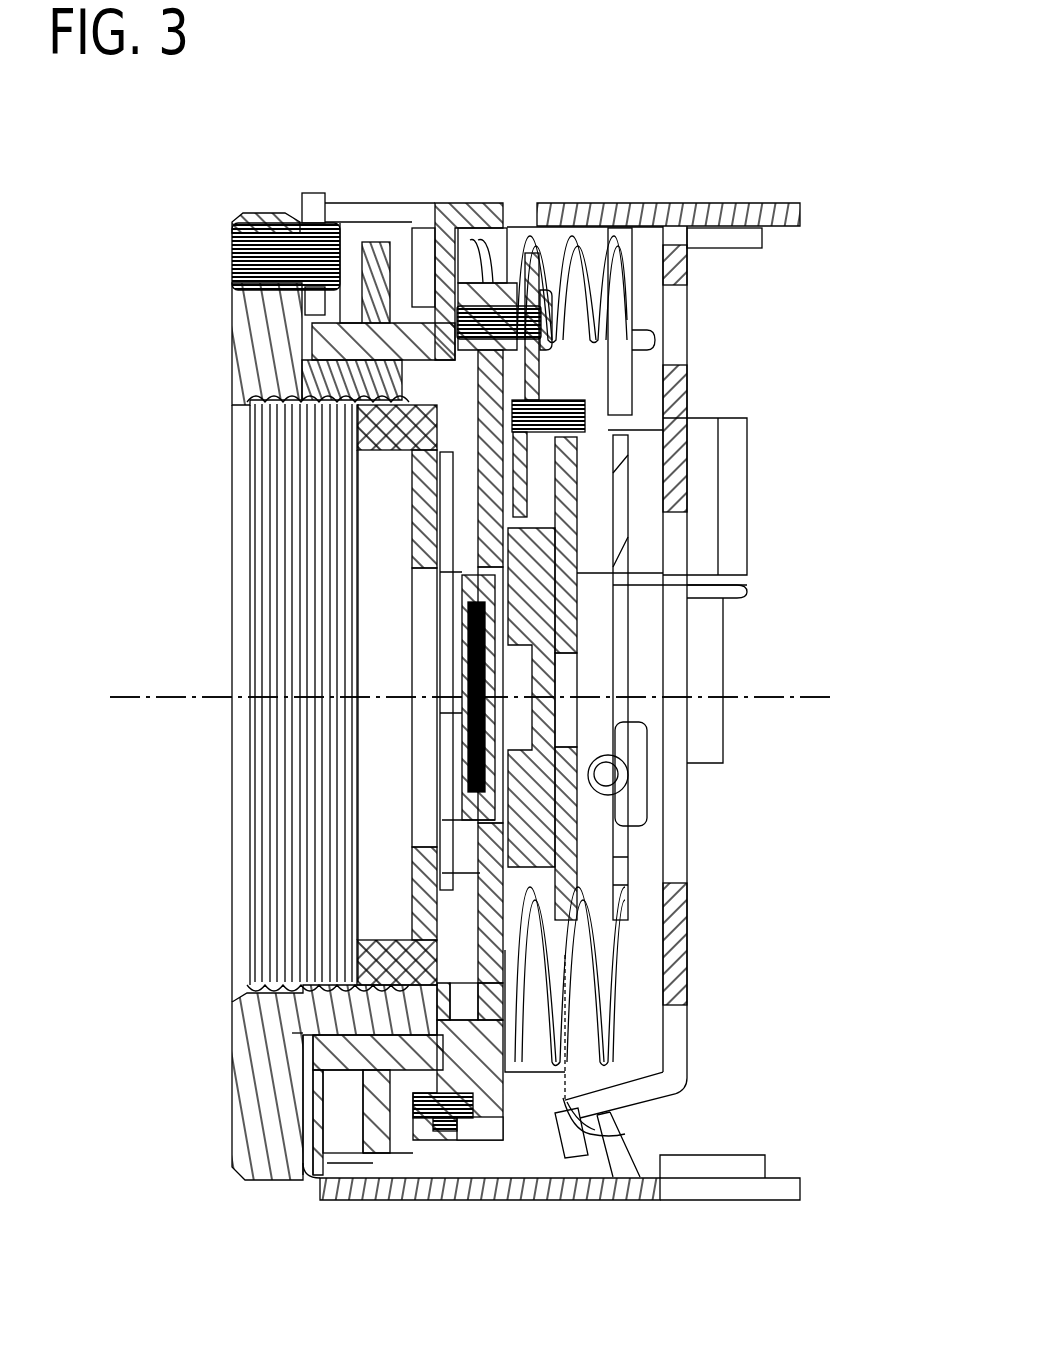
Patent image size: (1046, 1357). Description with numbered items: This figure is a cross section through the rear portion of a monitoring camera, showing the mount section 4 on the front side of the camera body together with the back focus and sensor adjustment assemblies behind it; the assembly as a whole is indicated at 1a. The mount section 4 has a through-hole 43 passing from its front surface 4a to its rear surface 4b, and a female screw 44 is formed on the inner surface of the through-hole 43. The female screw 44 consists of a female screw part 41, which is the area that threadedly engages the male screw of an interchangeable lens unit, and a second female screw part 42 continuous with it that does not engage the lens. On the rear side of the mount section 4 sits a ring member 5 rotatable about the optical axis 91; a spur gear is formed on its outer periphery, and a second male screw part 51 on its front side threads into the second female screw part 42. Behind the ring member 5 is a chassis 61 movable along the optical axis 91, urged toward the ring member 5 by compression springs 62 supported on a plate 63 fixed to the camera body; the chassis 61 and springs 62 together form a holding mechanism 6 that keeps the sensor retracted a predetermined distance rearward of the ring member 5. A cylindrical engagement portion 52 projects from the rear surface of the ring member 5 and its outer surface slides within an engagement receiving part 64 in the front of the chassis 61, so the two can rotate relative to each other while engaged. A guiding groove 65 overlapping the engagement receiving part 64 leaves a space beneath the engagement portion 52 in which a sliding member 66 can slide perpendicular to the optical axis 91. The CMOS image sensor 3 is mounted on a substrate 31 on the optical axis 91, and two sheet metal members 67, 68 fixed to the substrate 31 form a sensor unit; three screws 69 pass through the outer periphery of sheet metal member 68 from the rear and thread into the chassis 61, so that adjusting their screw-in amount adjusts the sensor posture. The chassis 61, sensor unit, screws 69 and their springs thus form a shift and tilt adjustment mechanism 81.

The lens unit 1a is at (712, 162).
The CMOS image sensor 3 is at (515, 802).
The mount section 4 is at (268, 1170).
The front surface 4a is at (233, 1037).
The rear surface 4b is at (432, 1137).
The ring member 5 is at (378, 1147).
The holding mechanism 6 is at (585, 124).
The substrate 31 is at (562, 622).
The female screw part 41 is at (307, 1003).
The second female screw part 42 is at (323, 1037).
The through-hole 43 is at (229, 968).
The female screw 44 is at (172, 1063).
The second male screw part 51 is at (384, 975).
The engagement portion 52 is at (428, 350).
The chassis 61 is at (497, 211).
The compression spring 62 is at (574, 210).
The plate 63 is at (677, 390).
The engagement receiving part 64 is at (418, 210).
The guiding groove 65 is at (458, 575).
The sliding member 66 is at (468, 588).
The sheet metal member 67 is at (530, 455).
The sheet metal member 68 is at (540, 368).
The screw 69 is at (555, 327).
The shift and tilt adjustment mechanism 81 is at (832, 329).
The optical axis 91 is at (148, 688).